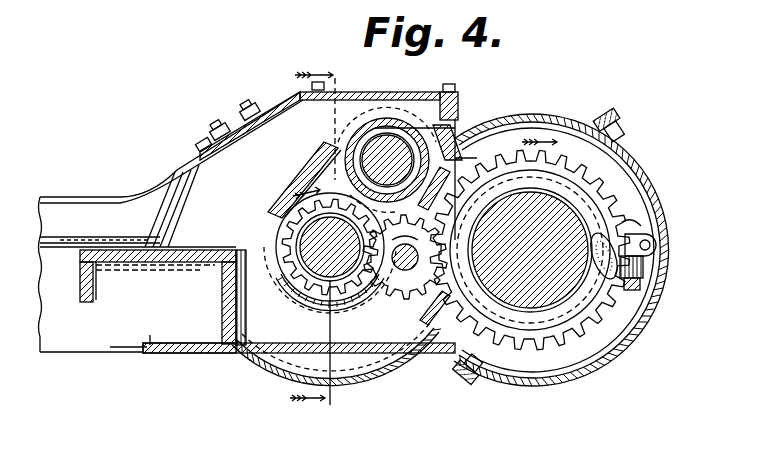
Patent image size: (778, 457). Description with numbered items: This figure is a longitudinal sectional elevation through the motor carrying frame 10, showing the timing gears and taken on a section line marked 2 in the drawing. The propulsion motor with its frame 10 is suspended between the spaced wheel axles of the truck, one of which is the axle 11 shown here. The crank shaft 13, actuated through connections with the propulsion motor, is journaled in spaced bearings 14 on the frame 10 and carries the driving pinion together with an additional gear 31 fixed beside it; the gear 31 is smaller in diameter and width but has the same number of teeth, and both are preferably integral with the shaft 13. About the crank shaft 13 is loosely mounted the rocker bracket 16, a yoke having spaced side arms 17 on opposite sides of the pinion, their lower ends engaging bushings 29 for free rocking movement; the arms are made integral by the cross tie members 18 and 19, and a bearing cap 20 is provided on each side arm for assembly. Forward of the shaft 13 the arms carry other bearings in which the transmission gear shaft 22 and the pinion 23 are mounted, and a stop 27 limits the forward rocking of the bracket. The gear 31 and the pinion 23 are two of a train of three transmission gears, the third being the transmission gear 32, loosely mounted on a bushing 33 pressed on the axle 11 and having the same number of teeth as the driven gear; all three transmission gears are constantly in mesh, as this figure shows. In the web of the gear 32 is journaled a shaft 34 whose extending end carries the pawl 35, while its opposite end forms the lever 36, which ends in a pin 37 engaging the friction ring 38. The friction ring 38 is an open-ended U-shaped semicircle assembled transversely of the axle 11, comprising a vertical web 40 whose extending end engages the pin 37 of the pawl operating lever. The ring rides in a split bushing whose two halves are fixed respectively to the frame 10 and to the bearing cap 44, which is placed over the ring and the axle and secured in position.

The section line 2 is at (312, 242).
The frame 10 is at (400, 322).
The wheel axle 11 is at (537, 298).
The crank shaft 13 is at (365, 268).
The bearings 14 is at (287, 305).
The rocker bracket 16 is at (340, 138).
The side arms 17 is at (328, 146).
The cross tie member 18 is at (452, 150).
The cross tie member 19 is at (292, 178).
The bearing cap 20 is at (315, 310).
The transmission gear shaft 22 is at (408, 262).
The pinion 23 is at (403, 300).
The stop 27 is at (513, 140).
The bushings 29 is at (325, 278).
The gear 31 is at (347, 320).
The transmission gear 32 is at (612, 196).
The bushing 33 is at (562, 200).
The shaft 34 is at (633, 272).
The pawl 35 is at (630, 275).
The lever 36 is at (641, 240).
The pin 37 is at (657, 246).
The friction ring 38 is at (627, 220).
The vertical web 40 is at (636, 266).
The bearing cap 44 is at (630, 333).